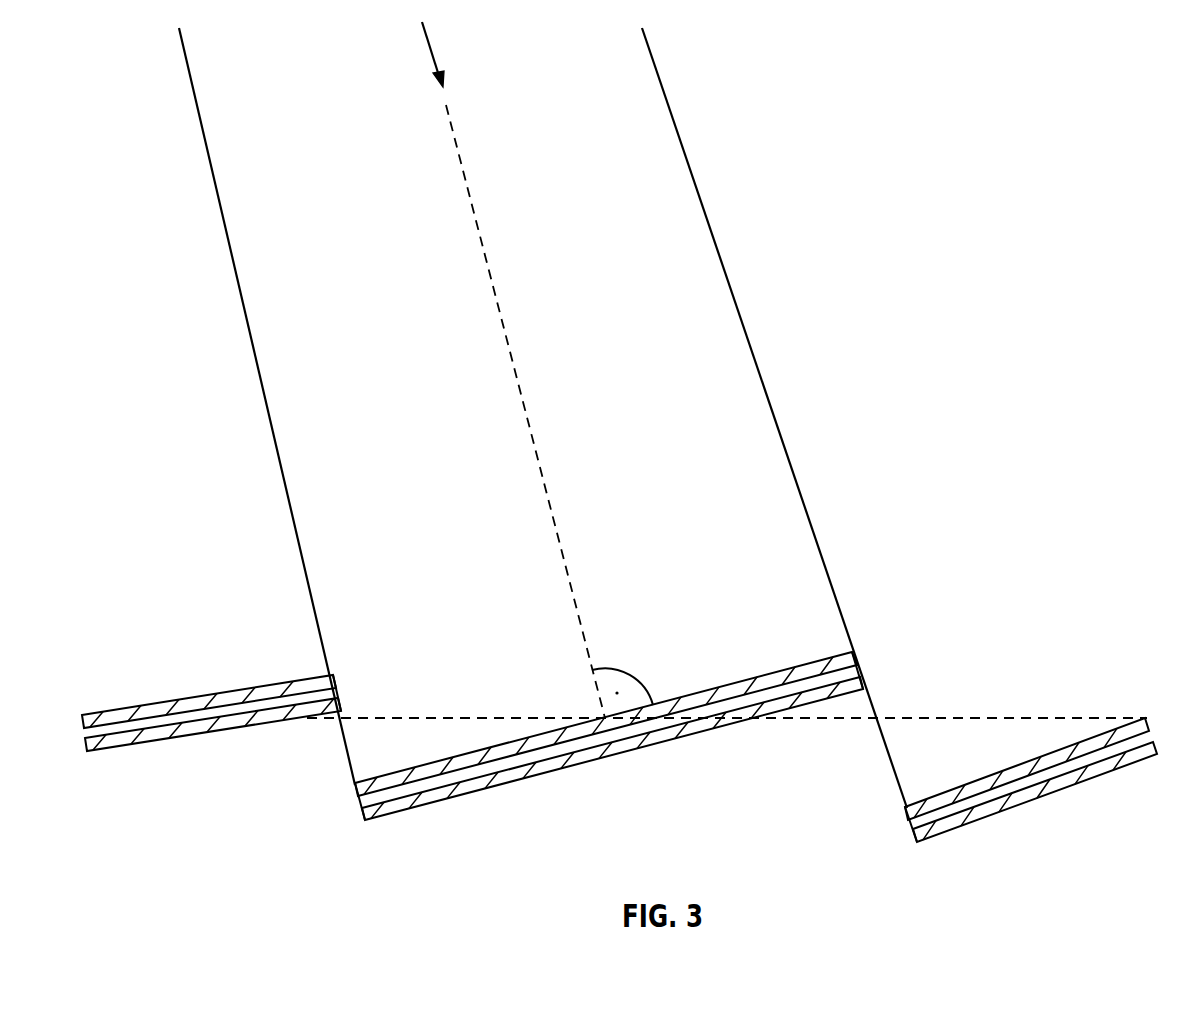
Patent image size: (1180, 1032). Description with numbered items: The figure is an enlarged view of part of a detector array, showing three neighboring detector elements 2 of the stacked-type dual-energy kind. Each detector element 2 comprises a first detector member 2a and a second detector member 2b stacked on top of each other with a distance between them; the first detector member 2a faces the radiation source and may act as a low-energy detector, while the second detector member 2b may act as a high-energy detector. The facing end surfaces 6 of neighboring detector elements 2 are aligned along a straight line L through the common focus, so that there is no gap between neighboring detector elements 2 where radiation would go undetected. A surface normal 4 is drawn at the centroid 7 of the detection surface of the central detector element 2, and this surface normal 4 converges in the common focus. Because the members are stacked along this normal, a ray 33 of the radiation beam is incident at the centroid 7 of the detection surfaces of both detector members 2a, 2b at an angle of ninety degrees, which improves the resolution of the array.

The detector element 2 is at (619, 724).
The first detector member 2a is at (355, 785).
The second detector member 2b is at (362, 810).
The surface normal 4 is at (512, 360).
The end surface 6 is at (333, 681).
The centroid 7 is at (607, 722).
The ray 33 is at (432, 51).
The straight line L is at (254, 338).